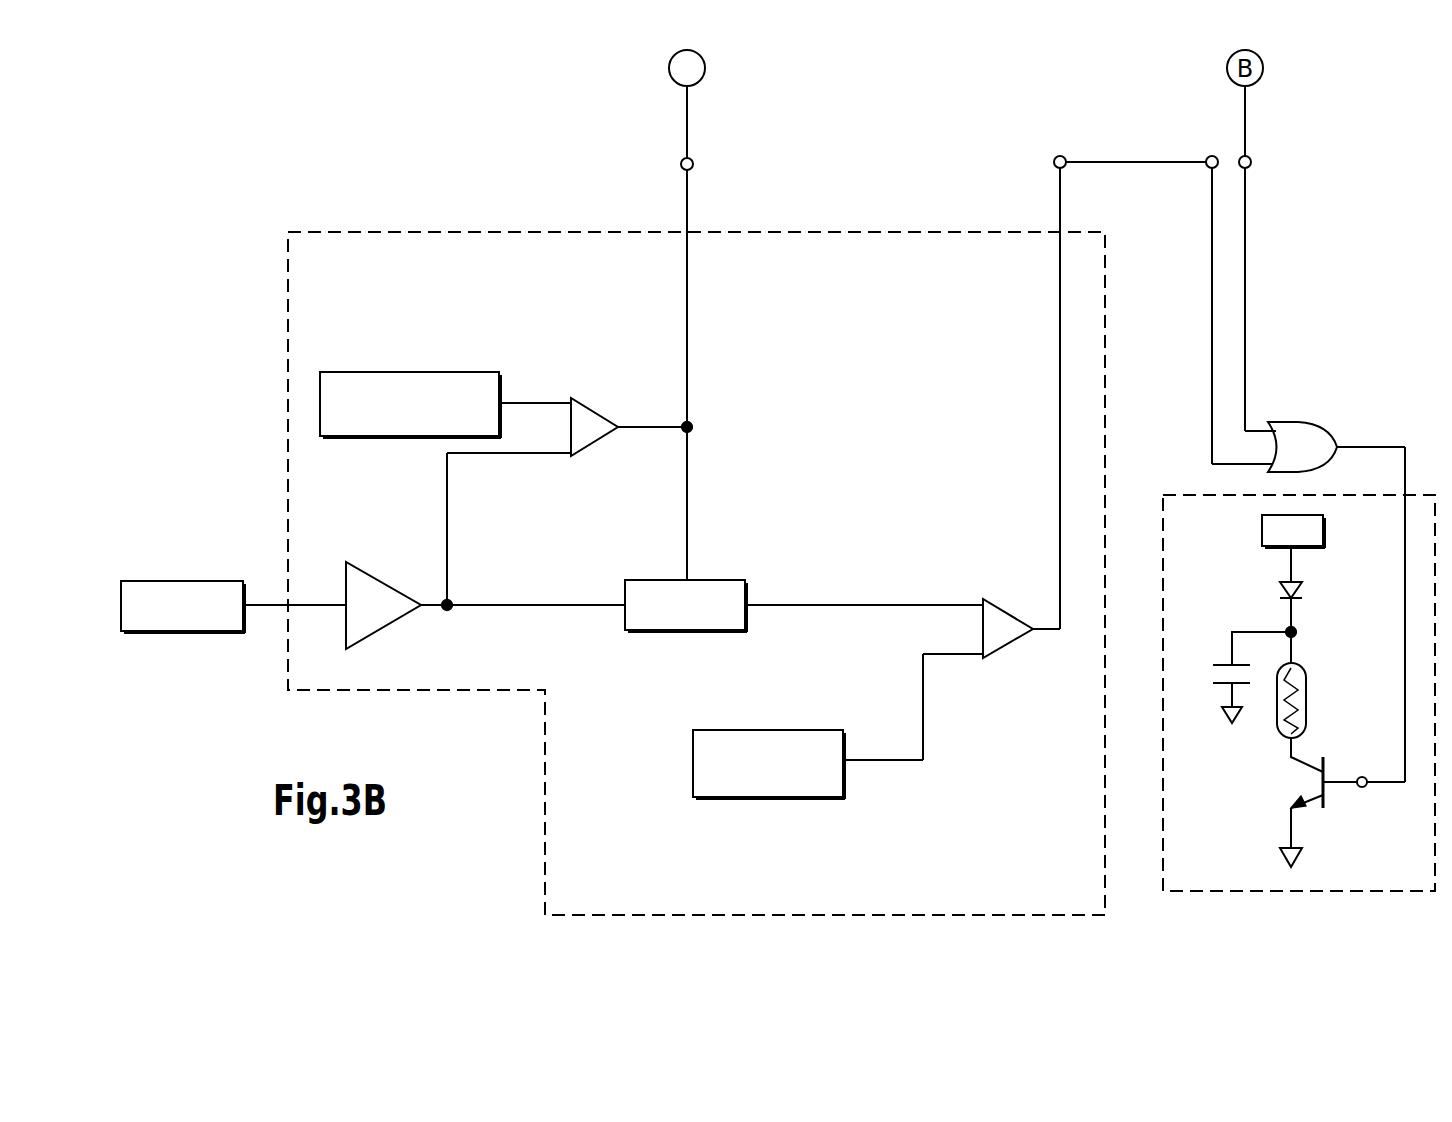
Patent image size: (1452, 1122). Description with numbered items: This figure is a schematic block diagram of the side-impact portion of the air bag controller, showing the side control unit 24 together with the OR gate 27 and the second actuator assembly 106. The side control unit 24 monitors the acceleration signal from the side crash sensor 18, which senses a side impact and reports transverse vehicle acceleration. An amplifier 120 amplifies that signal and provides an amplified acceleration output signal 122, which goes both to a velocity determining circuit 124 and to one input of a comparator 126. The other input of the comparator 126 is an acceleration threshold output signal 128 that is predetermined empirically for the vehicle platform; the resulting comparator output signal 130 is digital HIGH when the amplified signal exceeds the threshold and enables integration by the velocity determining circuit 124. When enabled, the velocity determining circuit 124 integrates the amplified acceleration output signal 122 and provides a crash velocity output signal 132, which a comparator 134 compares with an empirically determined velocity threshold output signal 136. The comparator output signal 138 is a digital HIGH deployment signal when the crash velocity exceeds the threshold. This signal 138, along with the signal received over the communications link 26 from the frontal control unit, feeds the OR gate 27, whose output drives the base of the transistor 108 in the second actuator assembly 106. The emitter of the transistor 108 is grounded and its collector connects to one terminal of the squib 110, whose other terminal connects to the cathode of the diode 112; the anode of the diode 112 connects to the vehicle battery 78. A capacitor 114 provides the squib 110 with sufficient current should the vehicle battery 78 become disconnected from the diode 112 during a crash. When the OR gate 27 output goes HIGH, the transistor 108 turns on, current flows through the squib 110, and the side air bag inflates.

The side crash sensor 18 is at (153, 580).
The side control unit 24 is at (288, 252).
The communications link 26 is at (687, 128).
The OR gate 27 is at (1293, 420).
The vehicle battery 78 is at (1262, 530).
The second actuator assembly 106 is at (1193, 495).
The transistor 108 is at (1327, 798).
The squib 110 is at (1277, 705).
The diode 112 is at (1302, 592).
The capacitor 114 is at (1213, 665).
The amplifier 120 is at (372, 634).
The amplified acceleration output signal 122 is at (420, 598).
The velocity determining circuit 124 is at (708, 580).
The comparator 126 is at (592, 432).
The acceleration threshold output signal 128 is at (453, 372).
The comparator output signal 130 is at (620, 427).
The crash velocity output signal 132 is at (748, 598).
The comparator 134 is at (1018, 618).
The velocity threshold output signal 136 is at (845, 762).
The comparator output signal 138 is at (1040, 640).